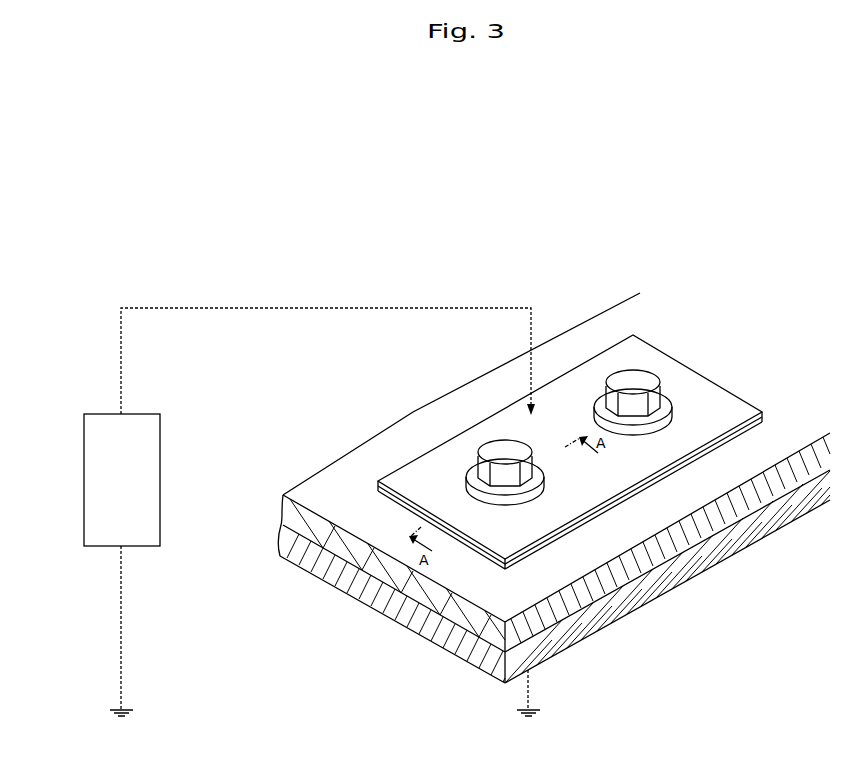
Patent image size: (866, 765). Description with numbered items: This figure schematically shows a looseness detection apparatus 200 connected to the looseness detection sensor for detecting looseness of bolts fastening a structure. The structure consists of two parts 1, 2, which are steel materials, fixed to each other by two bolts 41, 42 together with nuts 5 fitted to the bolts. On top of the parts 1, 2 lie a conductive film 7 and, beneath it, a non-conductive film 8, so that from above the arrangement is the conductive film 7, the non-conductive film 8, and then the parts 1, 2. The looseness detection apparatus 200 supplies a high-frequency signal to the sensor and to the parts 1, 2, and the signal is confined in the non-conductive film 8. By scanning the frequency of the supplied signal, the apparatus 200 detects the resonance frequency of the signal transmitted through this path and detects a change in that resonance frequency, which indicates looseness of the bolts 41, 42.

The looseness detection apparatus 200 is at (84, 435).
The part 1 is at (720, 563).
The part 2 is at (777, 515).
The bolt 41 is at (507, 457).
The bolt 42 is at (636, 387).
The nut 5 is at (544, 478).
The conductive film 7 is at (750, 407).
The non-conductive film 8 is at (765, 421).